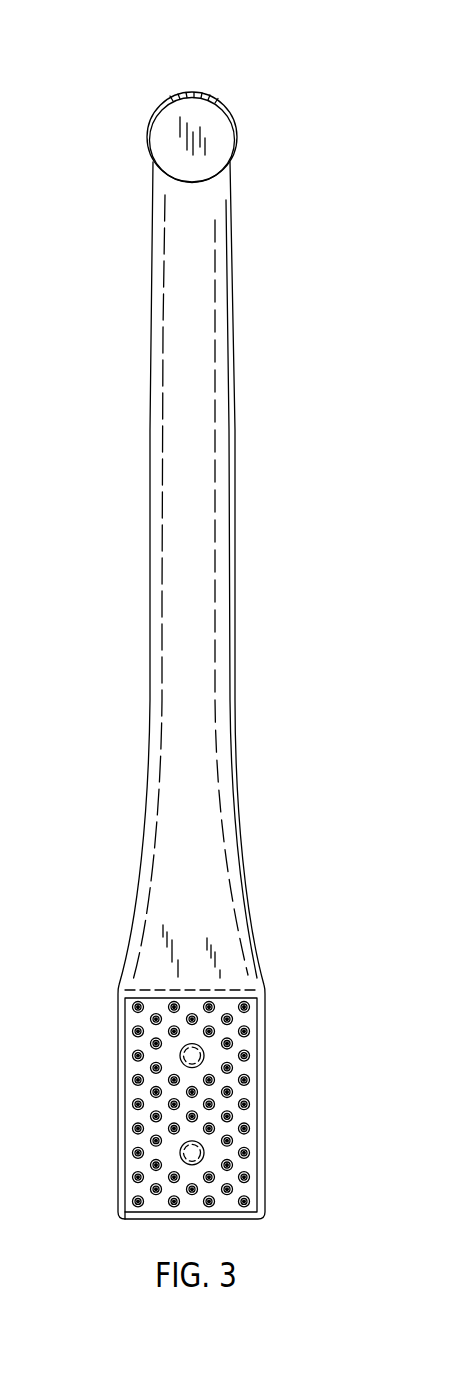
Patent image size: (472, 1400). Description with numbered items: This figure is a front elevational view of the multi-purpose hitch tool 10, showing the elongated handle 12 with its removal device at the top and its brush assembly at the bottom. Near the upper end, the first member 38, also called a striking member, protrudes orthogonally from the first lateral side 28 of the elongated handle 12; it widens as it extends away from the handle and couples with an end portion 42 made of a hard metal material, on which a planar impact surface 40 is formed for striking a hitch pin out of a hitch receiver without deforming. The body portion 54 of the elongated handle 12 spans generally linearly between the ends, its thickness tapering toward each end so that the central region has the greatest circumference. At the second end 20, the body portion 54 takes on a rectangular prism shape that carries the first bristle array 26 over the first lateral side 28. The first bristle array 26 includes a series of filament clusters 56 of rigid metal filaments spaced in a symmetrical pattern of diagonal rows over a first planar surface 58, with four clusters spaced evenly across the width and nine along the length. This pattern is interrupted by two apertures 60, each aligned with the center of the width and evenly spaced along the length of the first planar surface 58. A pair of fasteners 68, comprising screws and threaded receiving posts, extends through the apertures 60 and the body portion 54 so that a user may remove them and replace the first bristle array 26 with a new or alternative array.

The multi-purpose hitch tool 10 is at (145, 68).
The elongated handle 12 is at (247, 377).
The second end 20 is at (275, 988).
The first bristle array 26 is at (130, 1208).
The first lateral side 28 is at (198, 968).
The first member 38 is at (142, 100).
The planar impact surface 40 is at (212, 133).
The end portion 42 is at (150, 134).
The body portion 54 is at (192, 578).
The filament clusters 56 is at (155, 1068).
The first planar surface 58 is at (237, 1020).
The apertures 60 is at (204, 1062).
The fasteners 68 is at (185, 1047).